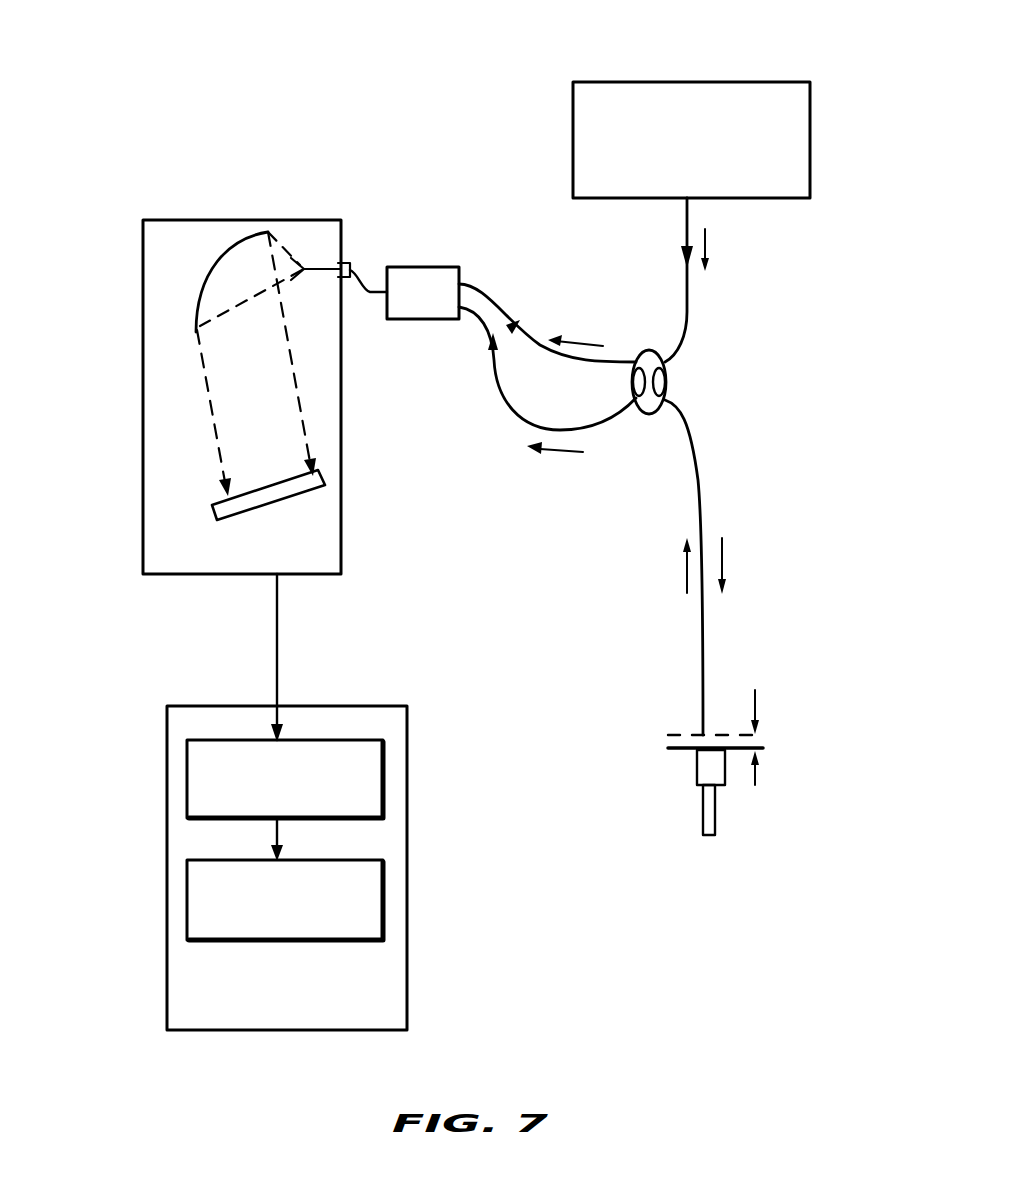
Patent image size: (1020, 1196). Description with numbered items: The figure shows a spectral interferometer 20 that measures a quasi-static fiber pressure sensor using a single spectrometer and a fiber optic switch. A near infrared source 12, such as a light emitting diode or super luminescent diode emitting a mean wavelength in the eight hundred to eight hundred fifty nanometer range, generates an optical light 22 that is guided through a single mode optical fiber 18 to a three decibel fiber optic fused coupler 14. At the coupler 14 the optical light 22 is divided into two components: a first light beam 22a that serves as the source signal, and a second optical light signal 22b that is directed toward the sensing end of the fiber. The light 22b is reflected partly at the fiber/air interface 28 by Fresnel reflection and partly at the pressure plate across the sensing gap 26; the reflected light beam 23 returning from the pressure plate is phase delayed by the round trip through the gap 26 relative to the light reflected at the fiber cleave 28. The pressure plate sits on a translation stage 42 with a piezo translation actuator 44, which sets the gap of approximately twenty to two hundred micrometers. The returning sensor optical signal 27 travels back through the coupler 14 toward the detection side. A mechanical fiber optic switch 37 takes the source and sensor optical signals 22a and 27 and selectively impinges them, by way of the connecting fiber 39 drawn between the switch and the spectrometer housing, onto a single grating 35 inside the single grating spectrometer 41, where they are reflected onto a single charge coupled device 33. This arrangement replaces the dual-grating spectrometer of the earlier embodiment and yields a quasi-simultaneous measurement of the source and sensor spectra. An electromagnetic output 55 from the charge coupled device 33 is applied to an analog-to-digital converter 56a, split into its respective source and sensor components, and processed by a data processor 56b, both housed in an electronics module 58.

The spectral interferometer 20 is at (457, 88).
The near infrared source 12 is at (810, 140).
The single mode optical fiber 18 is at (684, 323).
The optical light 22 is at (705, 240).
The 3 dB fiber optic fused coupler 14 is at (644, 352).
The mechanical fiber optic switch 37 is at (424, 267).
The sensor optical signal 27 is at (588, 312).
The first light beam 22a is at (566, 452).
The fiber to spectrometer 39 is at (369, 296).
The single grating spectrometer 41 is at (142, 219).
The single grating 35 is at (183, 308).
The single charge coupled device 33 is at (305, 491).
The electromagnetic output 55 is at (278, 618).
The electronics module 58 is at (166, 887).
The analog-to-digital converter 56a is at (375, 763).
The data processor 56b is at (374, 895).
The fiber/air interface 28 is at (705, 733).
The reflected light beam 23 is at (682, 560).
The second optical light signal 22b is at (722, 562).
The sensing gap 26 is at (762, 741).
The piezo translation actuator 44 is at (695, 770).
The translation stage 42 is at (717, 813).